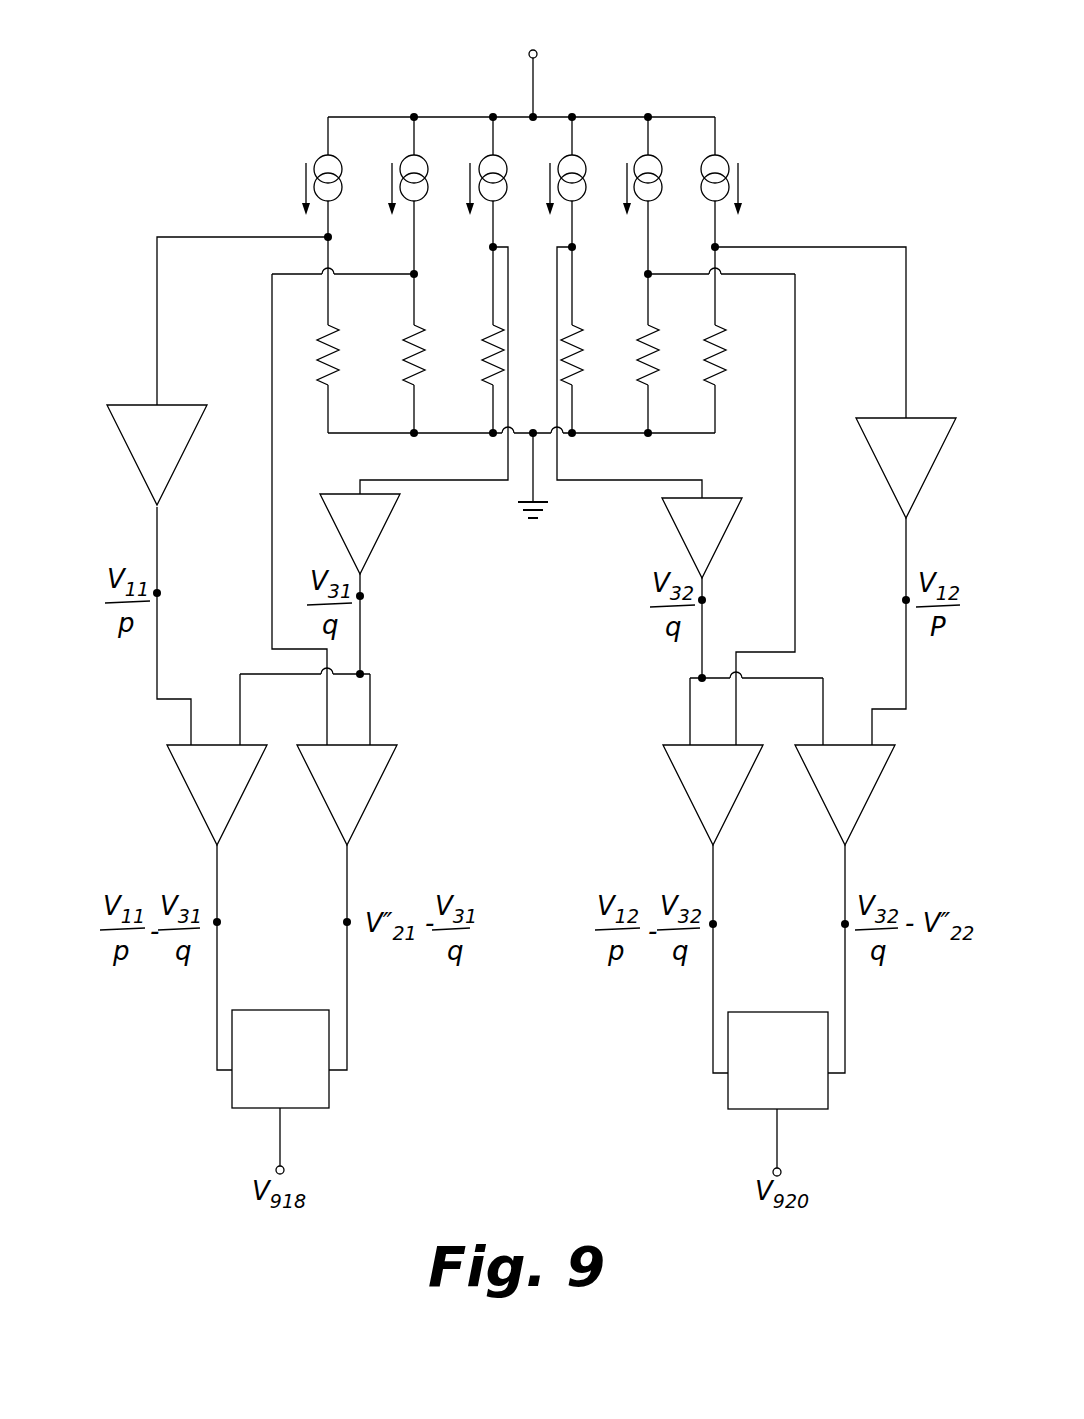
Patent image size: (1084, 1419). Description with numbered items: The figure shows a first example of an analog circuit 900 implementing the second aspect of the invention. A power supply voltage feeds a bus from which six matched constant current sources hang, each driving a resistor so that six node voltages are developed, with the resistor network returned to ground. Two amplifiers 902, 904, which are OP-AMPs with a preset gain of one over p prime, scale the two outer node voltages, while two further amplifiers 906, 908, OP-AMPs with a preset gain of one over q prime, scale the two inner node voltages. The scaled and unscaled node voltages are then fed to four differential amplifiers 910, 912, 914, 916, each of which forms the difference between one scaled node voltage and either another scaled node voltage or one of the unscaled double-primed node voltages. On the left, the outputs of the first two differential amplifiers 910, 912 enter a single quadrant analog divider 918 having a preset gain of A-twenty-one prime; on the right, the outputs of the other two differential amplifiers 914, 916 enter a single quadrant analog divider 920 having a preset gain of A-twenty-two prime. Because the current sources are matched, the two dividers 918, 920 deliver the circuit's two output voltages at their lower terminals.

The analog circuit 900 is at (247, 138).
The amplifier 902 is at (196, 405).
The amplifier 904 is at (897, 418).
The amplifier 906 is at (382, 535).
The amplifier 908 is at (683, 535).
The differential amplifier 910 is at (190, 793).
The differential amplifier 912 is at (328, 812).
The differential amplifier 914 is at (730, 815).
The differential amplifier 916 is at (870, 795).
The single quadrant analog divider 918 is at (232, 1087).
The single quadrant analog divider 920 is at (828, 1090).